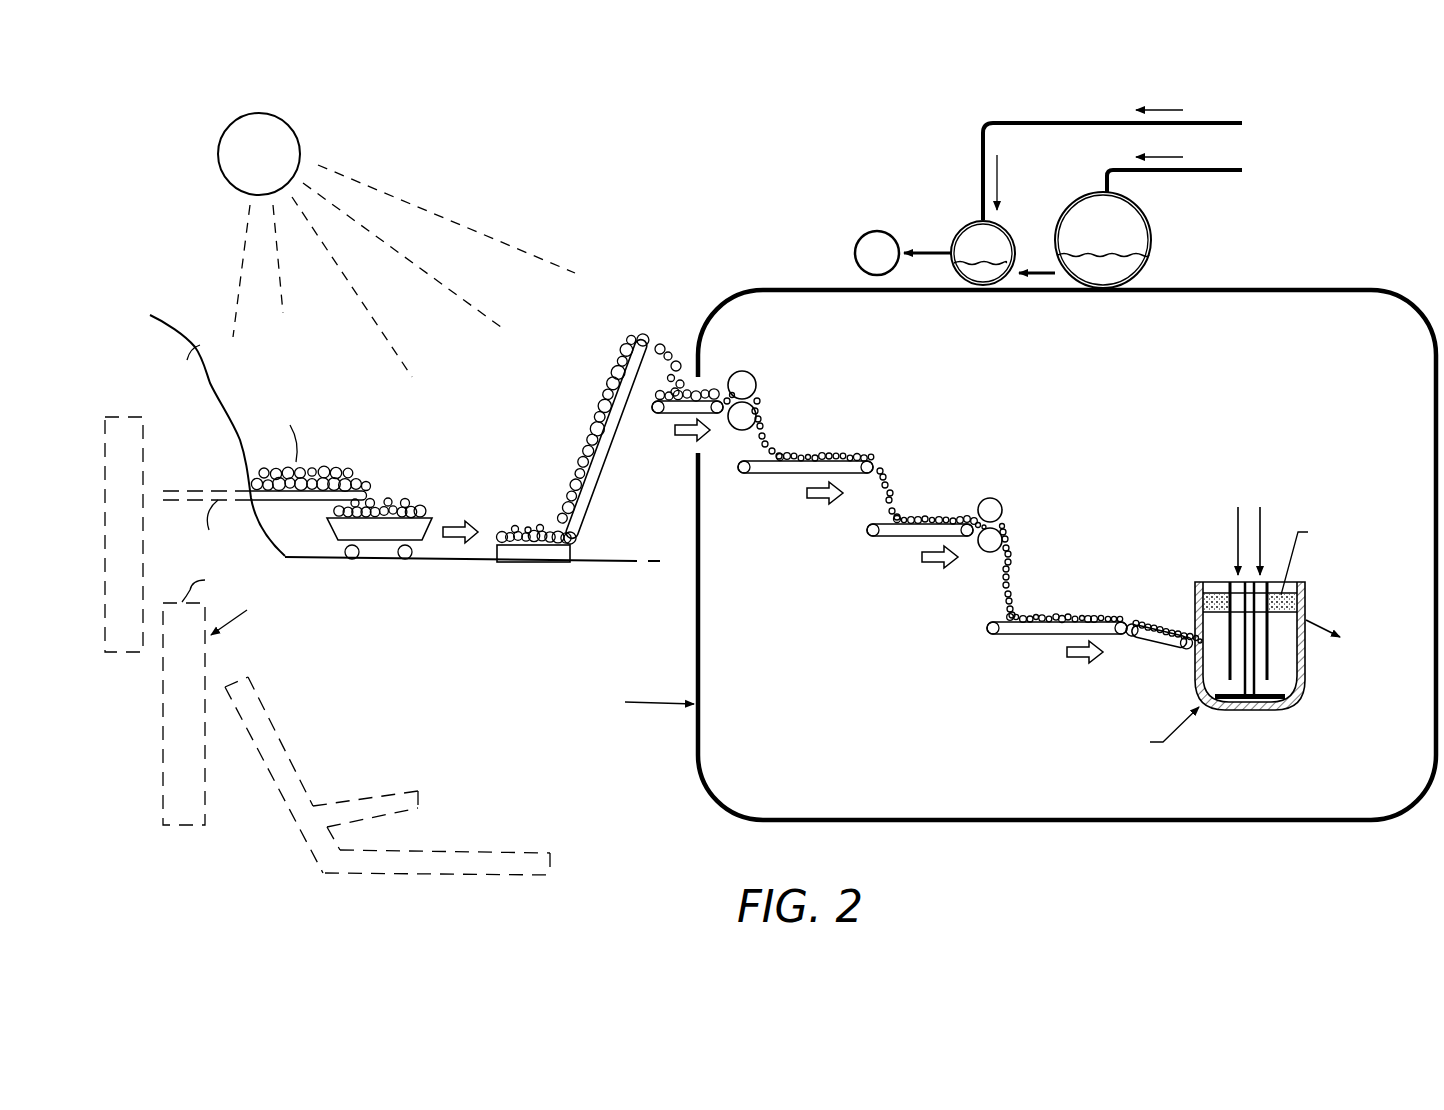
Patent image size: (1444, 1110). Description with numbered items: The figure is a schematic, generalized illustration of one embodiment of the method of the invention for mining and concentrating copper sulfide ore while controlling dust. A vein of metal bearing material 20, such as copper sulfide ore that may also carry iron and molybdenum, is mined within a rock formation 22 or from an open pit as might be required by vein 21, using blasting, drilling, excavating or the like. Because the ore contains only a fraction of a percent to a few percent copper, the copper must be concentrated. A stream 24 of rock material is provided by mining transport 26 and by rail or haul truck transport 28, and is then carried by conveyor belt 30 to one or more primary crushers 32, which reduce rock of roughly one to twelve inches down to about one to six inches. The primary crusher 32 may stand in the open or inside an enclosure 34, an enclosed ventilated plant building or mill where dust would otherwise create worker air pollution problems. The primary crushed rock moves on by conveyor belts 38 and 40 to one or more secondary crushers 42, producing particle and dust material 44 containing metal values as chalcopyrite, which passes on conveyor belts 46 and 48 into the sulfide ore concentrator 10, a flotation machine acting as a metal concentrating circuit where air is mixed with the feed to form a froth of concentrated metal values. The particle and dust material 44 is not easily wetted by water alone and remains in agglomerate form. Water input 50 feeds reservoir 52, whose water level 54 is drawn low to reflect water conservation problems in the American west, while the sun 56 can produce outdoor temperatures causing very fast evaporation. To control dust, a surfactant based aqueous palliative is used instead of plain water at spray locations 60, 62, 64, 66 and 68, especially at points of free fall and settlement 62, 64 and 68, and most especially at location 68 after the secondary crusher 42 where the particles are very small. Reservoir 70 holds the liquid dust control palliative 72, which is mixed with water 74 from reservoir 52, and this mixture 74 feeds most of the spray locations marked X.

The sulfide ore concentrator 10 is at (1168, 712).
The vein of metal bearing material 20 is at (145, 565).
The vein 21 is at (293, 813).
The rock formation 22 is at (196, 353).
The stream of rock material 24 is at (240, 417).
The mining transport 26 is at (282, 502).
The rail or haul truck transport 28 is at (377, 535).
The conveyor belt 30 is at (607, 462).
The primary crusher 32 is at (746, 370).
The enclosure 34 is at (696, 645).
The conveyor belt 38 is at (660, 415).
The conveyor belt 40 is at (767, 475).
The secondary crusher 42 is at (1000, 497).
The particle and dust material 44 is at (1005, 585).
The conveyor belt 46 is at (887, 538).
The conveyor belt 48 is at (1045, 638).
The water input 50 is at (1236, 174).
The reservoir 52 is at (1150, 225).
The water level 54 is at (1126, 262).
The sun 56 is at (283, 121).
The spray location 60 is at (529, 516).
The spray location 62 is at (658, 331).
The spray location 64 is at (786, 420).
The spray location 66 is at (903, 477).
The spray location 68 is at (1073, 602).
The reservoir 70 is at (1006, 226).
The liquid dust control palliative 72 is at (1199, 164).
The water / mixture 74 is at (930, 247).